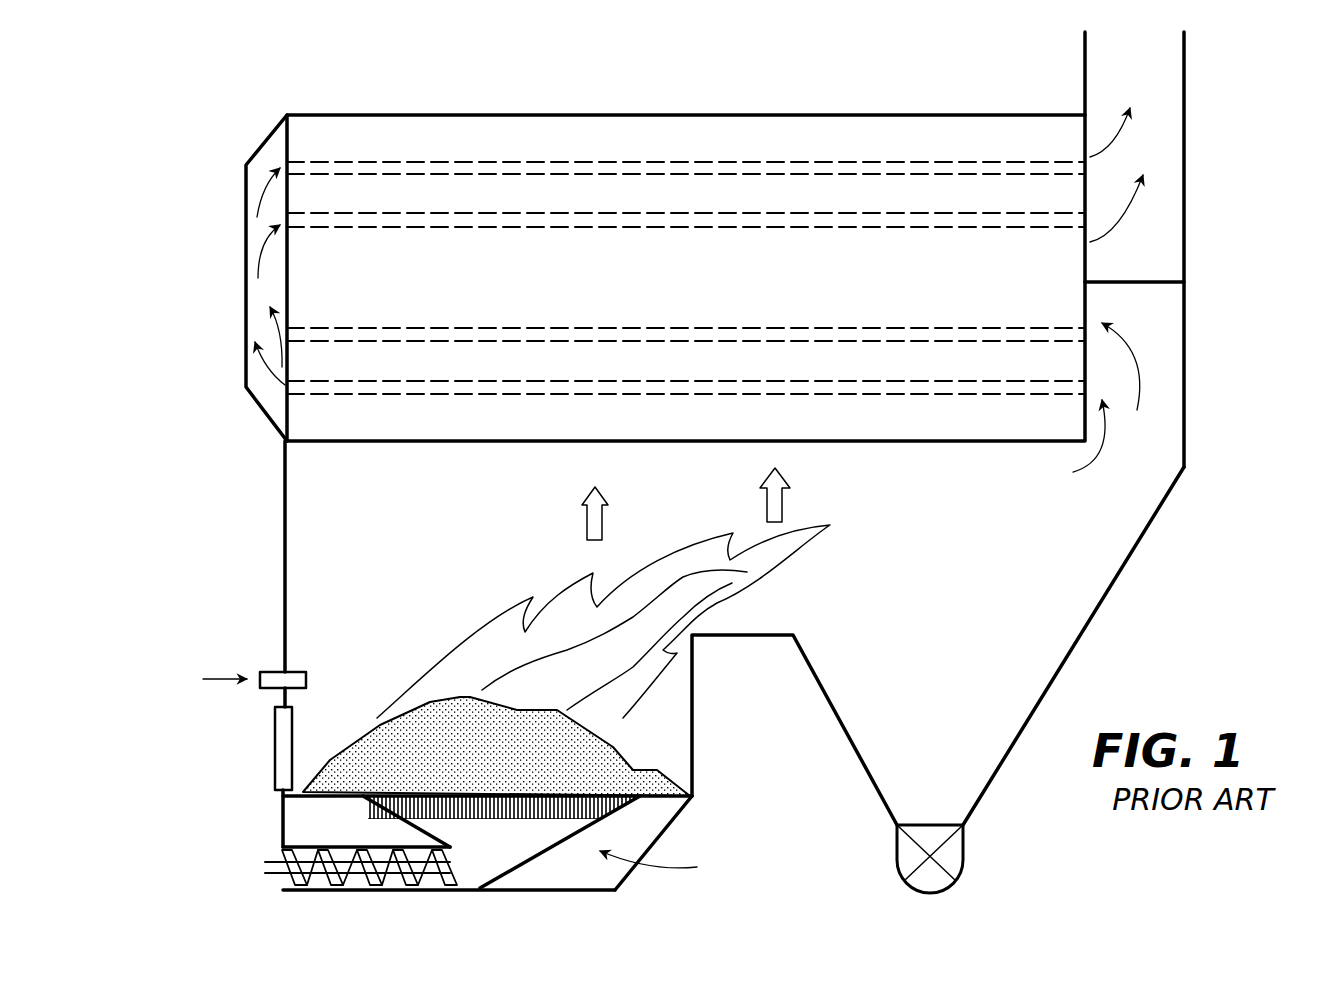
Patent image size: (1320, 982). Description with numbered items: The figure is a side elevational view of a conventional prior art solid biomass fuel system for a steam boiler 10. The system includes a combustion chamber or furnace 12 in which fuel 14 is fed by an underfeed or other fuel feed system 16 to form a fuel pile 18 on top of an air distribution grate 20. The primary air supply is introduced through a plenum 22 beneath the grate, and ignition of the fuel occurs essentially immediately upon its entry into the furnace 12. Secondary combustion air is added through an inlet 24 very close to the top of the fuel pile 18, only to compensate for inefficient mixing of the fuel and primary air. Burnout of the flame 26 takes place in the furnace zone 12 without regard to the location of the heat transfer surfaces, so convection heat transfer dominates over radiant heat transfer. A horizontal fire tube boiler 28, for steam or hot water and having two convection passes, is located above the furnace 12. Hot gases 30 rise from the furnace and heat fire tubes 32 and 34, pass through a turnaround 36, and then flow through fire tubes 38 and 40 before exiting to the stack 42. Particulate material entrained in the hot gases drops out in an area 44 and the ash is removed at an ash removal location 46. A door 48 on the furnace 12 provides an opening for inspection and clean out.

The solid biomass fuel system for a steam boiler 10 is at (832, 102).
The combustion chamber or furnace 12 is at (371, 587).
The fuel 14 is at (469, 859).
The fuel feed system 16 is at (283, 858).
The fuel pile 18 is at (625, 770).
The air distribution grate 20 is at (390, 802).
The plenum 22 is at (660, 818).
The inlet 24 is at (268, 670).
The flame 26 is at (793, 550).
The horizontal fire tube boiler 28 is at (679, 286).
The hot gases 30 is at (941, 493).
The fire tube 32 is at (853, 327).
The fire tube 34 is at (830, 385).
The turnaround 36 is at (246, 291).
The fire tube 38 is at (568, 160).
The fire tube 40 is at (608, 214).
The stack 42 is at (1116, 72).
The area 44 is at (916, 714).
The ash removal 46 is at (962, 848).
The door 48 is at (278, 742).